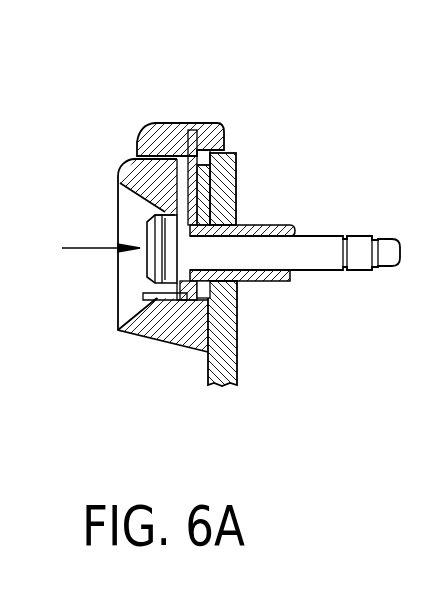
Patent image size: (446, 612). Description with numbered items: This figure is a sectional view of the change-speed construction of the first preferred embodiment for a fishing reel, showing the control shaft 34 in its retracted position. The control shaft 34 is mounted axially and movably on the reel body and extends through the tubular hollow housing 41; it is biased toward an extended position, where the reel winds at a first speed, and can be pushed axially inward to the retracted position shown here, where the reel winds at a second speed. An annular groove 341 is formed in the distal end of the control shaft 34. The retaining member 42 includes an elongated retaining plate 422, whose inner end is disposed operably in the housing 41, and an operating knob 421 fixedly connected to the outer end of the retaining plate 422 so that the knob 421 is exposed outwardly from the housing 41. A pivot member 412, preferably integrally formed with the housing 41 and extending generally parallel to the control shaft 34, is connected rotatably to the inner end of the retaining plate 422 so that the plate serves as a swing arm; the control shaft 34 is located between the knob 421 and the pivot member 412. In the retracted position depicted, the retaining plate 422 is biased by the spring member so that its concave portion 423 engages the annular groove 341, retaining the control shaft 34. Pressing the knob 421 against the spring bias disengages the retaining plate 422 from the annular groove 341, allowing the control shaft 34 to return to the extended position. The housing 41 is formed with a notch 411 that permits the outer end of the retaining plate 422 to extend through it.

The tubular hollow housing 41 is at (118, 330).
The retaining member 42 is at (153, 128).
The operating knob 421 is at (173, 130).
The notch 411 is at (257, 160).
The pivot member 412 is at (213, 320).
The retaining plate 422 is at (212, 290).
The control shaft 34 is at (152, 265).
The annular groove 341 is at (150, 218).
The concave portion 423 is at (143, 293).